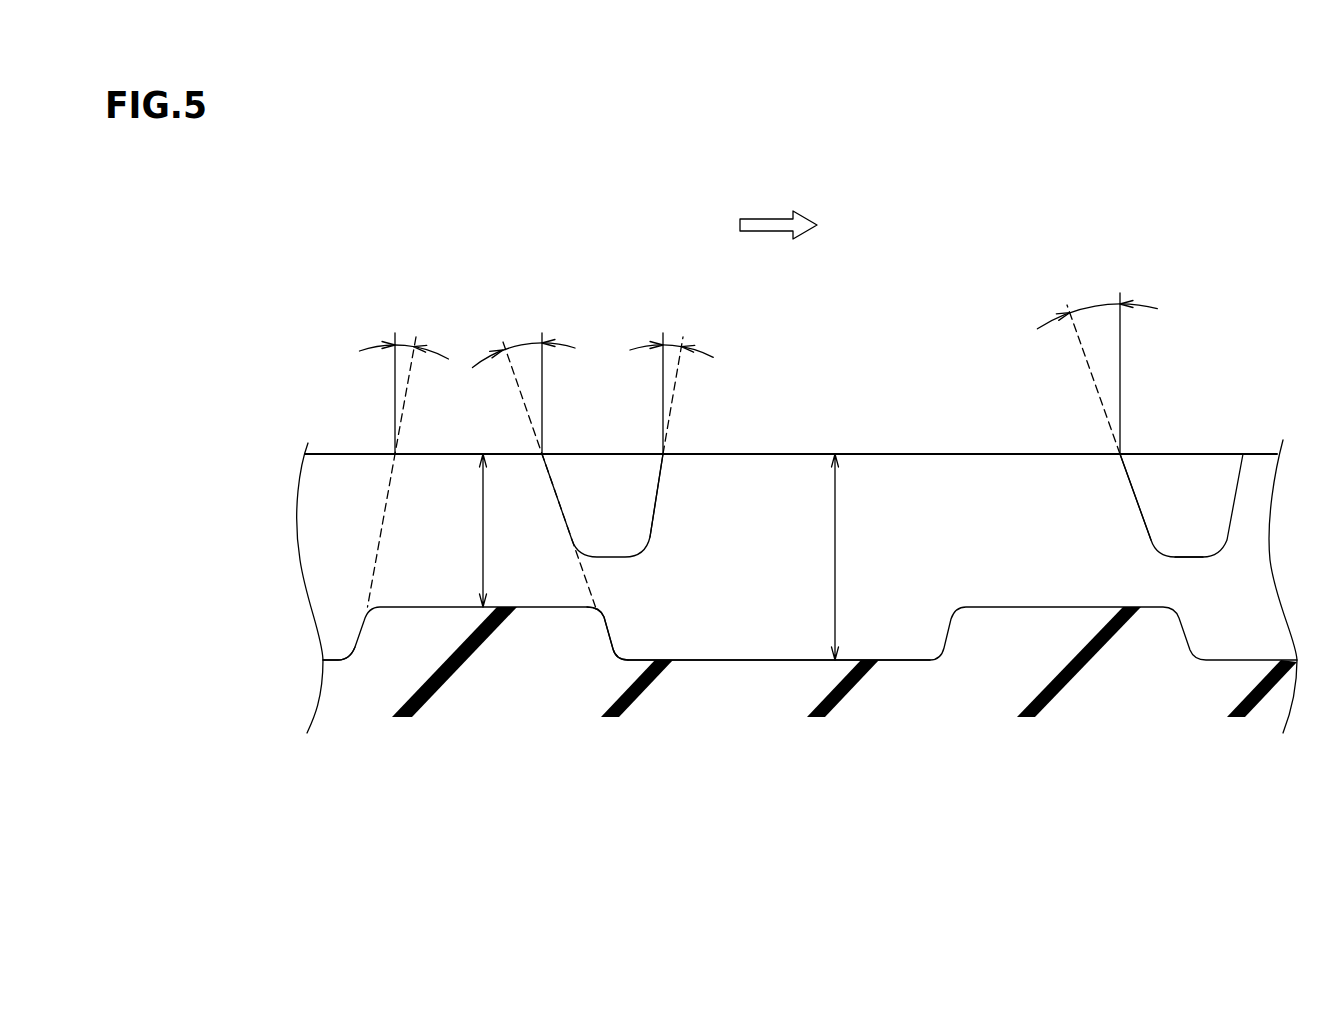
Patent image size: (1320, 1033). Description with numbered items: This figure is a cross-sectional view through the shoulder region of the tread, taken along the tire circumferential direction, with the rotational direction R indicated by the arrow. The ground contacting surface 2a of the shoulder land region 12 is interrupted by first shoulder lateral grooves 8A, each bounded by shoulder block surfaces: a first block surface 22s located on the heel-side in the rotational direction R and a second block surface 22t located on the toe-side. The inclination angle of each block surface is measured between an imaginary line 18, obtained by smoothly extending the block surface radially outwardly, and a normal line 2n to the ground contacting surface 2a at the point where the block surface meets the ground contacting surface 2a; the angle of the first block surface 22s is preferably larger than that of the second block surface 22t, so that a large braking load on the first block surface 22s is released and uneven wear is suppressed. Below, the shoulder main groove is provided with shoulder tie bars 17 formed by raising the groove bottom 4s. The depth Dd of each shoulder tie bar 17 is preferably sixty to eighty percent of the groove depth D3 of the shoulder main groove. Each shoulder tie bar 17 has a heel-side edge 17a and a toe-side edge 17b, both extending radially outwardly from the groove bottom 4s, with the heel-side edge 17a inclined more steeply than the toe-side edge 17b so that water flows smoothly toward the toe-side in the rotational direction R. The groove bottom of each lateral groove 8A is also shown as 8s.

The ground contacting surface 2a is at (945, 454).
The shoulder land region 12 is at (874, 454).
The first shoulder lateral groove 8A is at (599, 497).
The second block surface 22t is at (653, 490).
The first block surface 22s is at (1148, 522).
The shoulder tie bar 17 is at (433, 607).
The toe-side edge 17b is at (362, 643).
The heel-side edge 17a is at (620, 652).
The groove bottom 4s is at (697, 660).
The groove bottom 8s is at (1190, 557).
The depth of shoulder tie bar Dd is at (487, 530).
The groove depth of shoulder main groove D3 is at (833, 558).
The normal line 2n is at (543, 376).
The imaginary line 18 is at (673, 392).
The rotational direction R is at (790, 227).